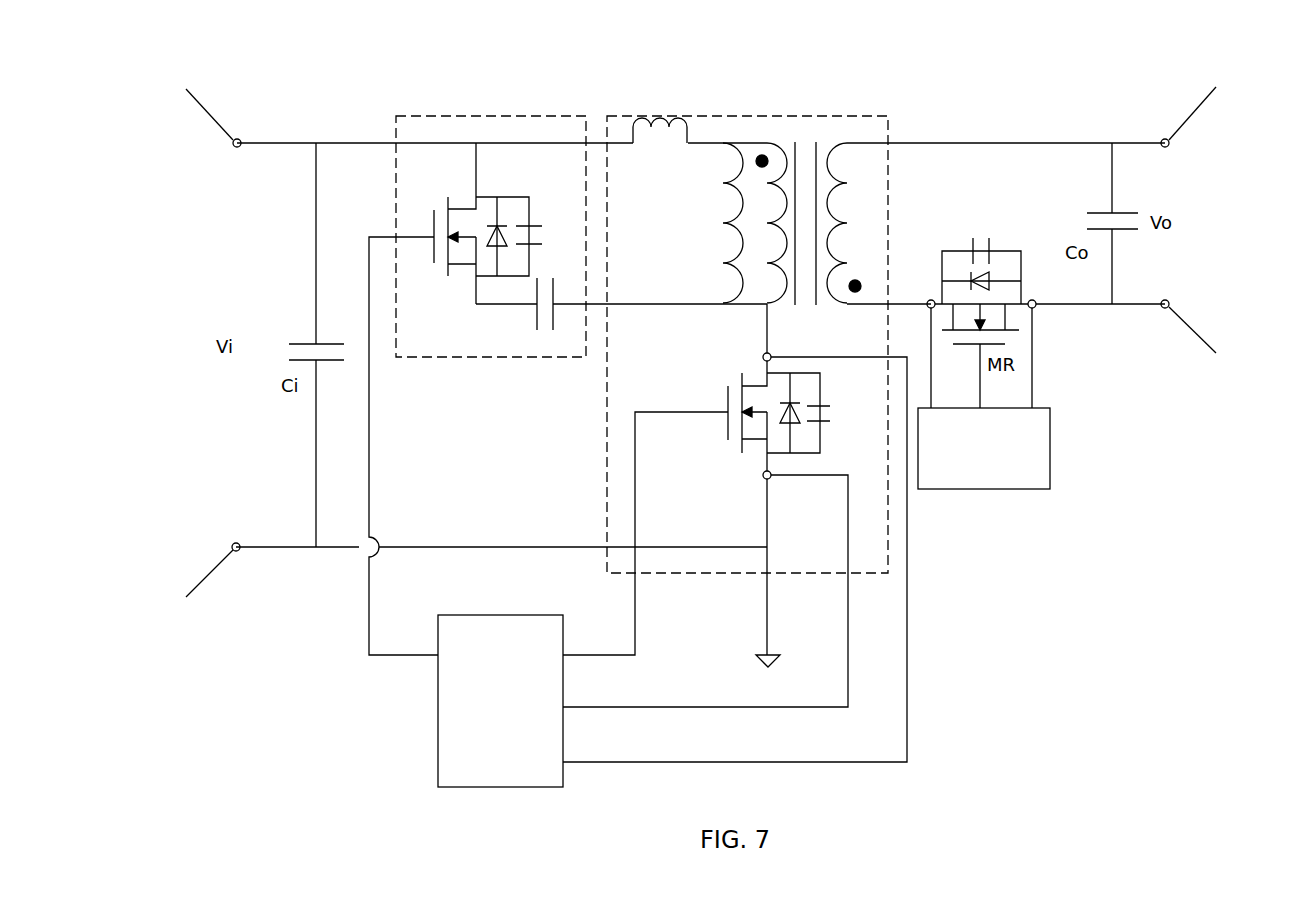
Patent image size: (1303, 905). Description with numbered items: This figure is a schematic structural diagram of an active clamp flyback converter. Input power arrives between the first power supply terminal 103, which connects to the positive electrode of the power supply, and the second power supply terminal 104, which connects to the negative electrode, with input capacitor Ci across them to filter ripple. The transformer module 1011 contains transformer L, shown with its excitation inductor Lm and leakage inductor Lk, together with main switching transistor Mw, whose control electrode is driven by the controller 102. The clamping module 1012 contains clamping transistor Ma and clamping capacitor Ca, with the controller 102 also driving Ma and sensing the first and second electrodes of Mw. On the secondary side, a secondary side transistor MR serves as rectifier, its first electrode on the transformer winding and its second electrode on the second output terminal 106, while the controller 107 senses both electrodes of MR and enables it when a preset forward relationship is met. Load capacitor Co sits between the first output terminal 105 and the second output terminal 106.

The controller 102 is at (500, 701).
The first power supply terminal 103 is at (185, 75).
The second power supply terminal 104 is at (185, 588).
The first output terminal 105 is at (1216, 72).
The second output terminal 106 is at (1217, 346).
The controller 107 is at (984, 448).
The transformer module 1011 is at (797, 115).
The clamping module 1012 is at (515, 115).